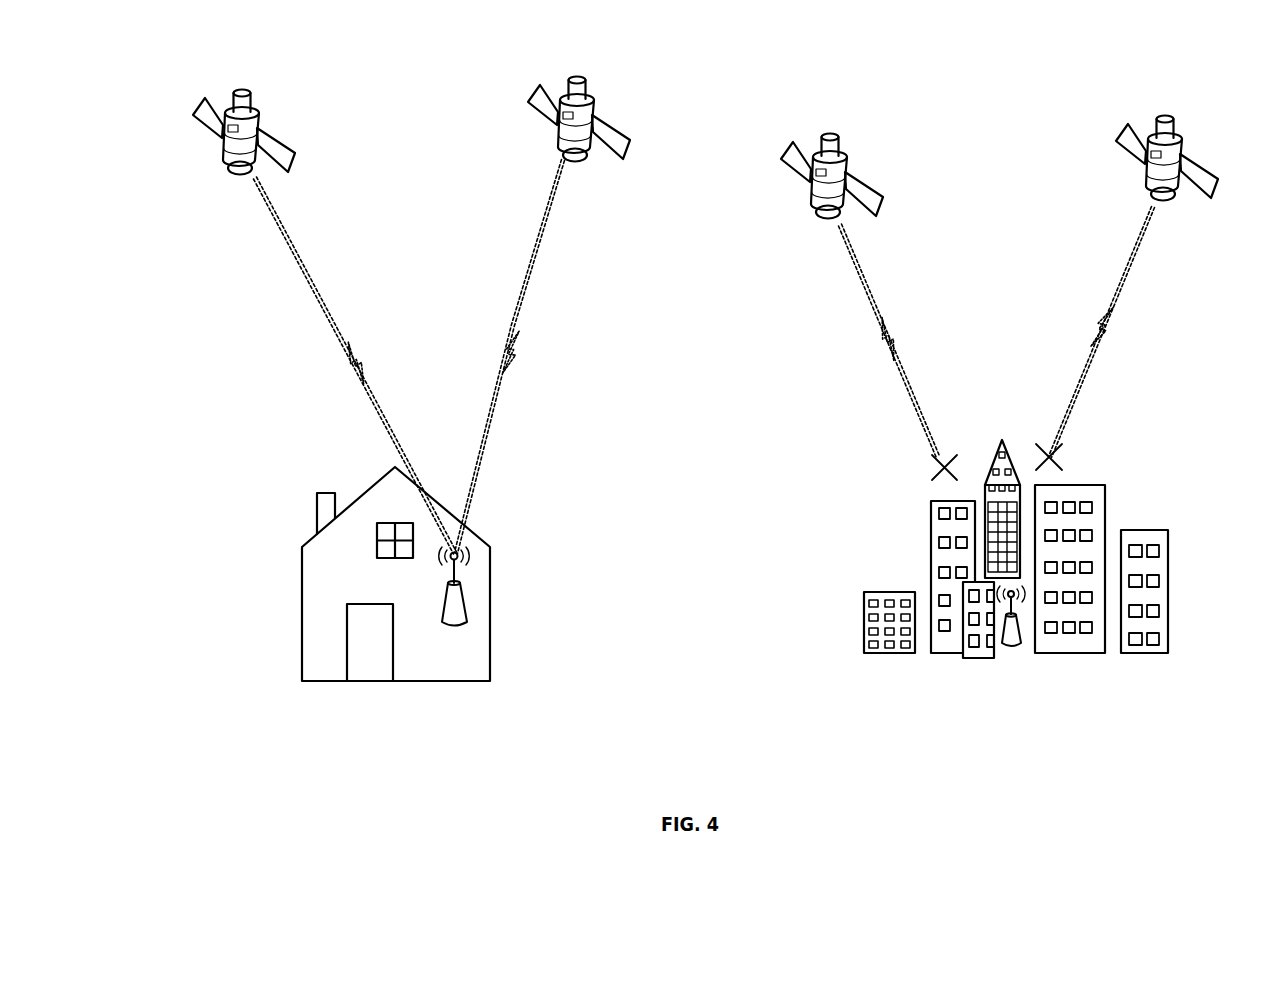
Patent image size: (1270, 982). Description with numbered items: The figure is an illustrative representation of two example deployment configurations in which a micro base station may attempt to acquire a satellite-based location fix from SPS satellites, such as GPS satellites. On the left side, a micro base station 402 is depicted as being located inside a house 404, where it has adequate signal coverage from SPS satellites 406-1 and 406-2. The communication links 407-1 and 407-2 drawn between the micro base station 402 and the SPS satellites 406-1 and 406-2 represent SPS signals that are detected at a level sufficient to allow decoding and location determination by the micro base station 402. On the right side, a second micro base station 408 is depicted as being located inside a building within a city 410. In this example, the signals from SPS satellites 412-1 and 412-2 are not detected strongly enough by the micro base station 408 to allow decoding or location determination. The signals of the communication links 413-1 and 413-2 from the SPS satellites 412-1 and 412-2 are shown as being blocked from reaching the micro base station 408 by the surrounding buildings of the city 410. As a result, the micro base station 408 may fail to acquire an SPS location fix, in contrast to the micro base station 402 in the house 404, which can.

The micro base station 402 is at (456, 630).
The house 404 is at (490, 578).
The SPS satellite 406-1 is at (258, 113).
The SPS satellite 406-2 is at (592, 100).
The communication link 407-1 is at (358, 353).
The communication link 407-2 is at (515, 322).
The micro base station 408 is at (1013, 648).
The city 410 is at (845, 517).
The SPS satellite 412-1 is at (880, 143).
The SPS satellite 412-2 is at (1182, 140).
The communication link 413-1 is at (930, 318).
The communication link 413-2 is at (1102, 308).